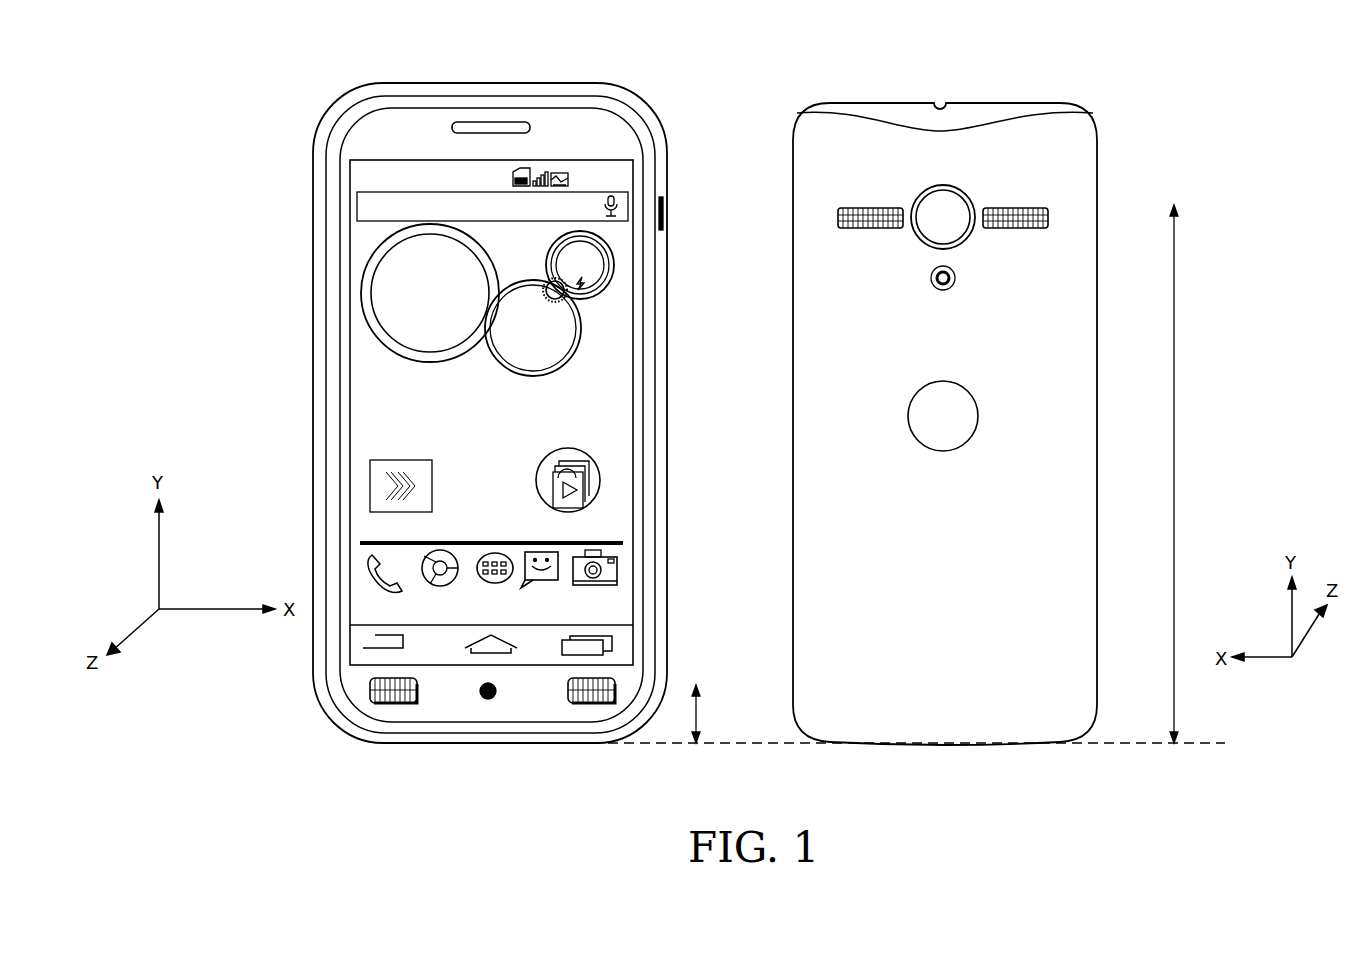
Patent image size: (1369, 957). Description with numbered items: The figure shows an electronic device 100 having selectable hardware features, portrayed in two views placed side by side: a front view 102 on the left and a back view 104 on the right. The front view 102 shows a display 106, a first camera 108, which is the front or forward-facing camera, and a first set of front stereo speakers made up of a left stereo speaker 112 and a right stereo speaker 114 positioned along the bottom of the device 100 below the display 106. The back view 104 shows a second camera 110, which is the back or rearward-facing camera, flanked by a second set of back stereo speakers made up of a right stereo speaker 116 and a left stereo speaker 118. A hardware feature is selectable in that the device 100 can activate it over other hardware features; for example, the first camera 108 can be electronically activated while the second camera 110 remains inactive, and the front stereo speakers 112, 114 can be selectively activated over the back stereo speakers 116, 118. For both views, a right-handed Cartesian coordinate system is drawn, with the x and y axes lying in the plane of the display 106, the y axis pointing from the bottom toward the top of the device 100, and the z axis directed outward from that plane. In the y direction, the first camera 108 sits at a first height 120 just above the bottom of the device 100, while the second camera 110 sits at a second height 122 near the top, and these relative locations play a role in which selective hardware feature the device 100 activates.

The electronic device 100 is at (1024, 397).
The front view 102 is at (312, 410).
The back view 104 is at (793, 505).
The display 106 is at (605, 425).
The first camera 108 is at (488, 700).
The second camera 110 is at (958, 190).
The left front stereo speaker 112 is at (397, 705).
The right front stereo speaker 114 is at (593, 705).
The right back stereo speaker 116 is at (838, 216).
The left back stereo speaker 118 is at (1048, 216).
The height h1 120 is at (696, 684).
The height h2 122 is at (1176, 413).